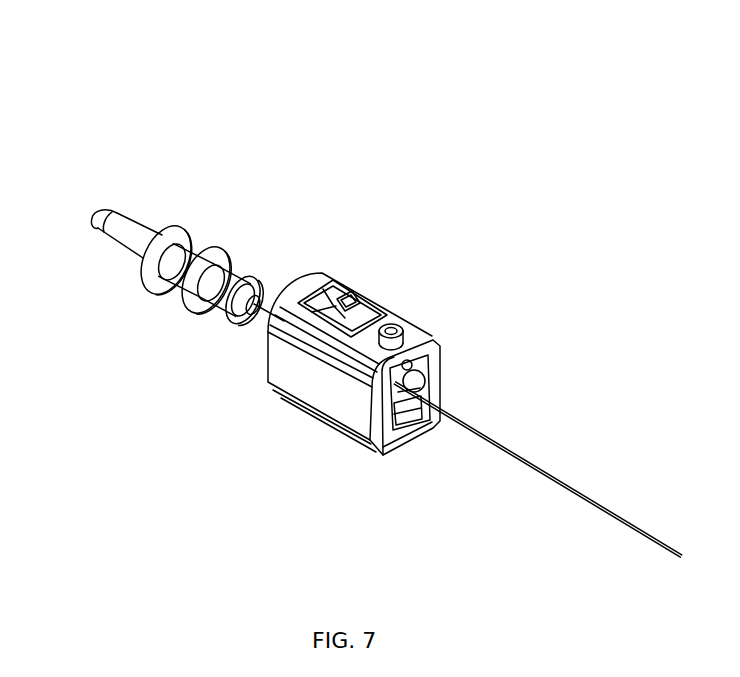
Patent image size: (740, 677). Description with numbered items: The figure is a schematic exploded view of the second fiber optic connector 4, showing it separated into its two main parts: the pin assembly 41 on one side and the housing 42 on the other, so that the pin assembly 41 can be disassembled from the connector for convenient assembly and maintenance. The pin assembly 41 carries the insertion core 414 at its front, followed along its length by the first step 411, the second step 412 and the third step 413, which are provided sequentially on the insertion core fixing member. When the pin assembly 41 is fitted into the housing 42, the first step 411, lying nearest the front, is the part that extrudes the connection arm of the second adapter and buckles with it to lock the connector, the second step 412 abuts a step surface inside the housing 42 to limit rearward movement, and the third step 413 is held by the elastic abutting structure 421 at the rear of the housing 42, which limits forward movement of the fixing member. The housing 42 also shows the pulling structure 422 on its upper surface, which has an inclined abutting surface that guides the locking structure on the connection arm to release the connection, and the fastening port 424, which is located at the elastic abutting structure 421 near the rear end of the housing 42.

The second fiber optic connector 4 is at (292, 212).
The pin assembly 41 is at (192, 200).
The insertion core 414 is at (86, 200).
The first step 411 is at (126, 283).
The second step 412 is at (178, 308).
The third step 413 is at (231, 323).
The housing 42 is at (422, 283).
The pulling structure 422 is at (345, 300).
The fastening port 424 is at (405, 318).
The elastic abutting structure 421 is at (441, 346).